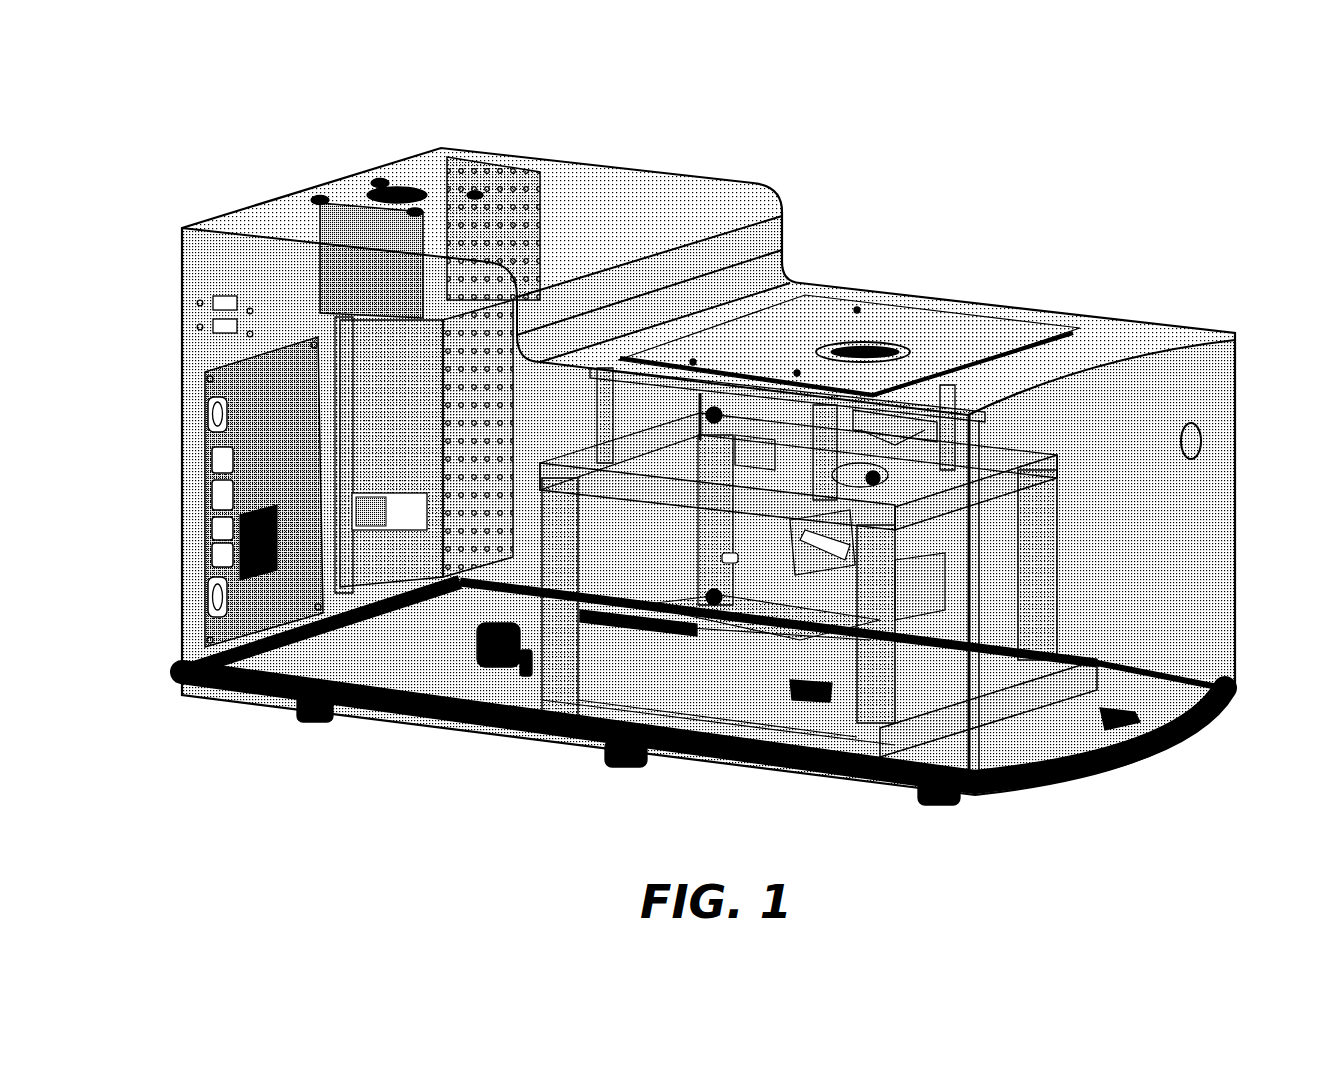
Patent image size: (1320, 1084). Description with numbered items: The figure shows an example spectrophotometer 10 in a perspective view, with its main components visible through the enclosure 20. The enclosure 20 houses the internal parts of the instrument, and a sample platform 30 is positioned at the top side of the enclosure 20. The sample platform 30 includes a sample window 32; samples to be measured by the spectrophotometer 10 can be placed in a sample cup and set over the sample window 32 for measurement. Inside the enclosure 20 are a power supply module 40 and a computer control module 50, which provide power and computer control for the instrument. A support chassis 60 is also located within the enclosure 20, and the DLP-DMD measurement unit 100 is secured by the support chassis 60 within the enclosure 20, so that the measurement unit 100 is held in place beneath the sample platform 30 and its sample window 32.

The spectrophotometer 10 is at (708, 440).
The enclosure 20 is at (733, 183).
The sample platform 30 is at (849, 328).
The sample window 32 is at (893, 350).
The power supply module 40 is at (531, 225).
The computer control module 50 is at (274, 368).
The support chassis 60 is at (573, 490).
The DLP-DMD measurement unit 100 is at (690, 518).